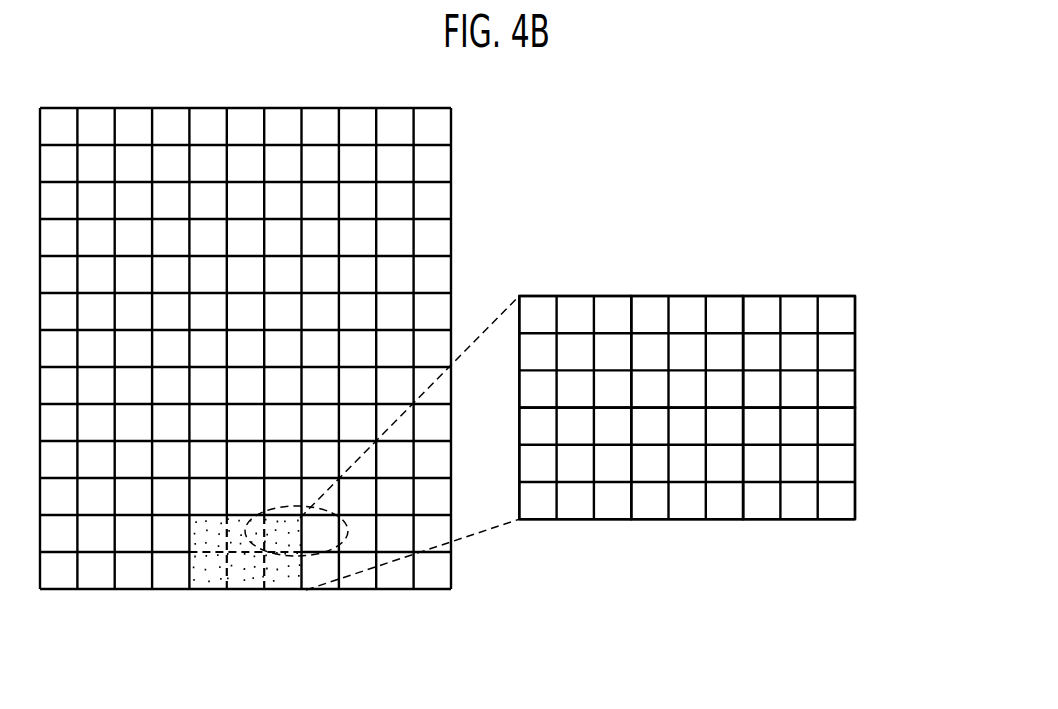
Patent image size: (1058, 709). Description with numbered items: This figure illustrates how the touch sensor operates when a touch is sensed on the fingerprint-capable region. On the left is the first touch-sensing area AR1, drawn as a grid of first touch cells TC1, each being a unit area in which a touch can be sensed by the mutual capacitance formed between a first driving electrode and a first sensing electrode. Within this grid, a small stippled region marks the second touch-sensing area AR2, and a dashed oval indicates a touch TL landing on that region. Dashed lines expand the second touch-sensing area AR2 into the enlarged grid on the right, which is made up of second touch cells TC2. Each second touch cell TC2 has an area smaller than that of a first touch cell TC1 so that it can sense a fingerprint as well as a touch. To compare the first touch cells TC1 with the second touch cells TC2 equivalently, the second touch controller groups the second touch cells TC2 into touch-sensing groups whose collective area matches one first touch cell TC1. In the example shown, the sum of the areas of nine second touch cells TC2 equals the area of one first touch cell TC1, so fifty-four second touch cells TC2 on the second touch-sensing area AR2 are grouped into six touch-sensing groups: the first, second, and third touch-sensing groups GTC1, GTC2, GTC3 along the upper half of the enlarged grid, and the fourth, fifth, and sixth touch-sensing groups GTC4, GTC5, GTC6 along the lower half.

The first touch cell TC1 is at (445, 132).
The first touch-sensing area AR1 is at (452, 200).
The second touch-sensing area AR2 is at (235, 590).
The touch TL is at (313, 557).
The second touch cell TC2 is at (850, 313).
The first touch-sensing group GTC1 is at (573, 295).
The second touch-sensing group GTC2 is at (686, 295).
The third touch-sensing group GTC3 is at (793, 295).
The fourth touch-sensing group GTC4 is at (572, 520).
The fifth touch-sensing group GTC5 is at (685, 520).
The sixth touch-sensing group GTC6 is at (792, 520).